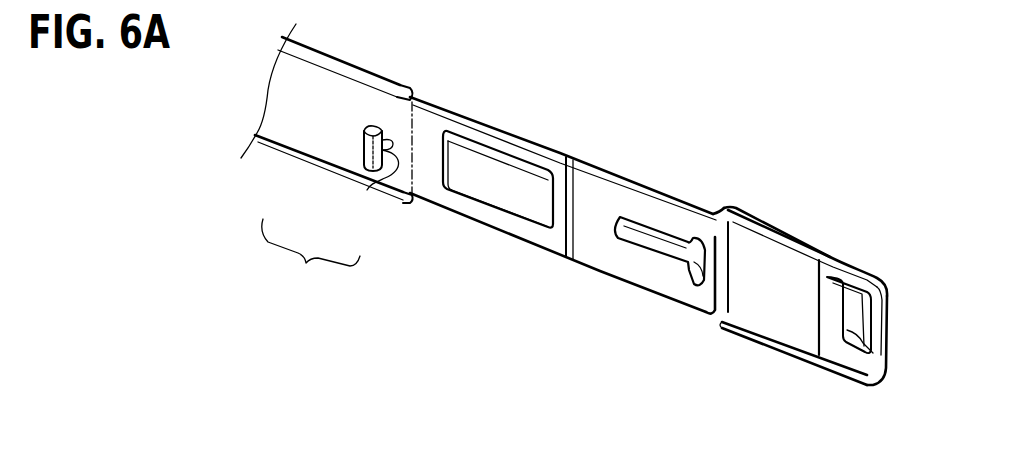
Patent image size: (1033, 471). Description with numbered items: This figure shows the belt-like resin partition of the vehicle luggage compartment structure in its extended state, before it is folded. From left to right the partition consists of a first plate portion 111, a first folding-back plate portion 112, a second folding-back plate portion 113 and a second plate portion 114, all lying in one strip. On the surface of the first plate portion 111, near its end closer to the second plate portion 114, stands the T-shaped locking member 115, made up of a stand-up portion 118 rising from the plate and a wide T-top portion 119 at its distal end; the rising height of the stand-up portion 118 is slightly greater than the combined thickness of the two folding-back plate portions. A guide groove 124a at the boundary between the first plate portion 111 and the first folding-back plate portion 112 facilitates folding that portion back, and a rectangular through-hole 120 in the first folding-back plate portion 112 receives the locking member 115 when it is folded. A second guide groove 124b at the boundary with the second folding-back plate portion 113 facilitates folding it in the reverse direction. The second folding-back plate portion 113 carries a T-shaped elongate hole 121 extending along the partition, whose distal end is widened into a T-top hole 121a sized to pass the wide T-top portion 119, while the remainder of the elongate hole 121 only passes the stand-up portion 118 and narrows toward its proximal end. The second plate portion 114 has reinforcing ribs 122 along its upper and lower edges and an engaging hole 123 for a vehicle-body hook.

The first plate portion 111 is at (341, 104).
The first folding-back plate portion 112 is at (497, 140).
The second folding-back plate portion 113 is at (635, 200).
The second plate portion 114 is at (767, 254).
The locking member 115 is at (310, 259).
The stand-up portion 118 is at (377, 180).
The wide T-top portion 119 is at (363, 148).
The through-hole 120 is at (490, 197).
The elongate hole 121 is at (641, 233).
The widened T-top hole 121a is at (693, 277).
The reinforcing ribs 122 is at (806, 244).
The engaging hole 123 is at (870, 374).
The guide groove 124a is at (418, 97).
The guide groove 124b is at (566, 214).